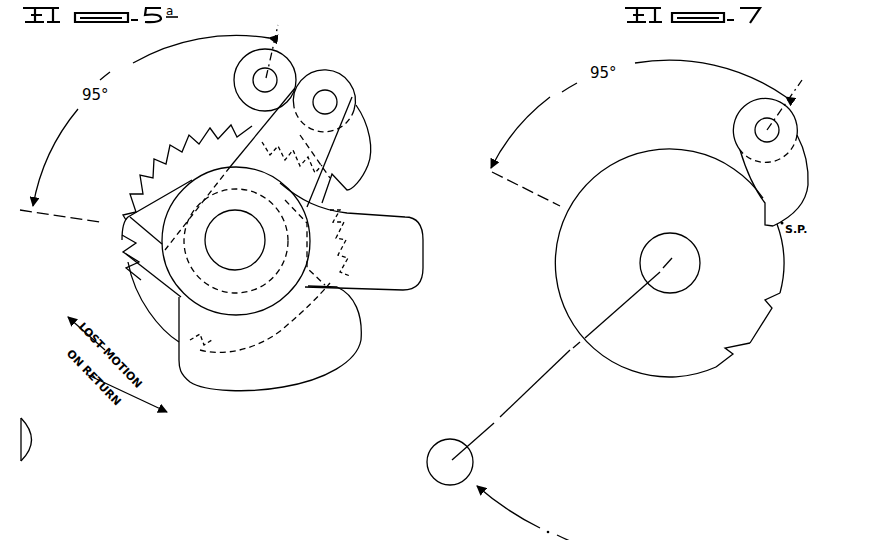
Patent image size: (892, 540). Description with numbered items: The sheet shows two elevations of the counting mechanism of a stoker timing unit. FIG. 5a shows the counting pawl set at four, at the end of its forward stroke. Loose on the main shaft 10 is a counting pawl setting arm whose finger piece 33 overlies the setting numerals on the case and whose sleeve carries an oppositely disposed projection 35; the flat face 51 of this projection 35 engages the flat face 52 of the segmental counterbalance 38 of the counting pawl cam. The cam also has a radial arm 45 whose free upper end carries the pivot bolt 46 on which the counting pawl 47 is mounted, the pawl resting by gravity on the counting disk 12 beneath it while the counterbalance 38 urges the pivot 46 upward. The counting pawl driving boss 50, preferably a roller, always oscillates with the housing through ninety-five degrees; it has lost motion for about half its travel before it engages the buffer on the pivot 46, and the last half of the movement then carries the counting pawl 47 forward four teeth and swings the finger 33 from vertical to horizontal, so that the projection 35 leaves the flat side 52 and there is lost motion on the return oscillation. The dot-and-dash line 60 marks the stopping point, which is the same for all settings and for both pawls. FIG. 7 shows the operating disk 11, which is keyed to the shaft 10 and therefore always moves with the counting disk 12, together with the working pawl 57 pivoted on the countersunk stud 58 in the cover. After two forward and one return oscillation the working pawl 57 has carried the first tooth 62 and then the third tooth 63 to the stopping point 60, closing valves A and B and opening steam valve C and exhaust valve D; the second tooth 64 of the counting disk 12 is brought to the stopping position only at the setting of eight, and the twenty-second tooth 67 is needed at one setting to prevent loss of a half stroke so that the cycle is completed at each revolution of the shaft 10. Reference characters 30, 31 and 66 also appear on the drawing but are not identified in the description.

In FIG. 7, the main operating shaft 10 is at (673, 283).
In FIG. 7, the operating disk 11 is at (669, 369).
In FIG. 5a, the counting disk 12 is at (143, 187).
In FIG. 5a, the hub 30 is at (187, 283).
In FIG. 5a, the crank arm 31 is at (83, 380).
In FIG. 7, the crank arm 31 is at (537, 387).
In FIG. 5a, the finger piece 33 is at (351, 236).
In FIG. 5a, the projection 35 is at (176, 254).
In FIG. 5a, the counterbalance 38 is at (270, 337).
In FIG. 5a, the radial arm 45 is at (280, 133).
In FIG. 5a, the pivot bolt 46 is at (332, 100).
In FIG. 5a, the counting pawl 47 is at (339, 152).
In FIG. 5a, the counting pawl driving boss 50 is at (268, 77).
In FIG. 5a, the flat face 51 is at (130, 253).
In FIG. 5a, the flat face 52 is at (133, 272).
In FIG. 7, the working pawl 57 is at (770, 162).
In FIG. 7, the countersunk stud 58 is at (757, 130).
In FIG. 5a, the stopping point 60 is at (410, 162).
In FIG. 7, the first tooth 62 is at (730, 350).
In FIG. 7, the third tooth 63 is at (763, 213).
In FIG. 7, the second tooth 64 is at (765, 298).
In FIG. 5a, the hidden tooth 66 is at (347, 272).
In FIG. 5a, the twenty-second tooth 67 is at (204, 355).